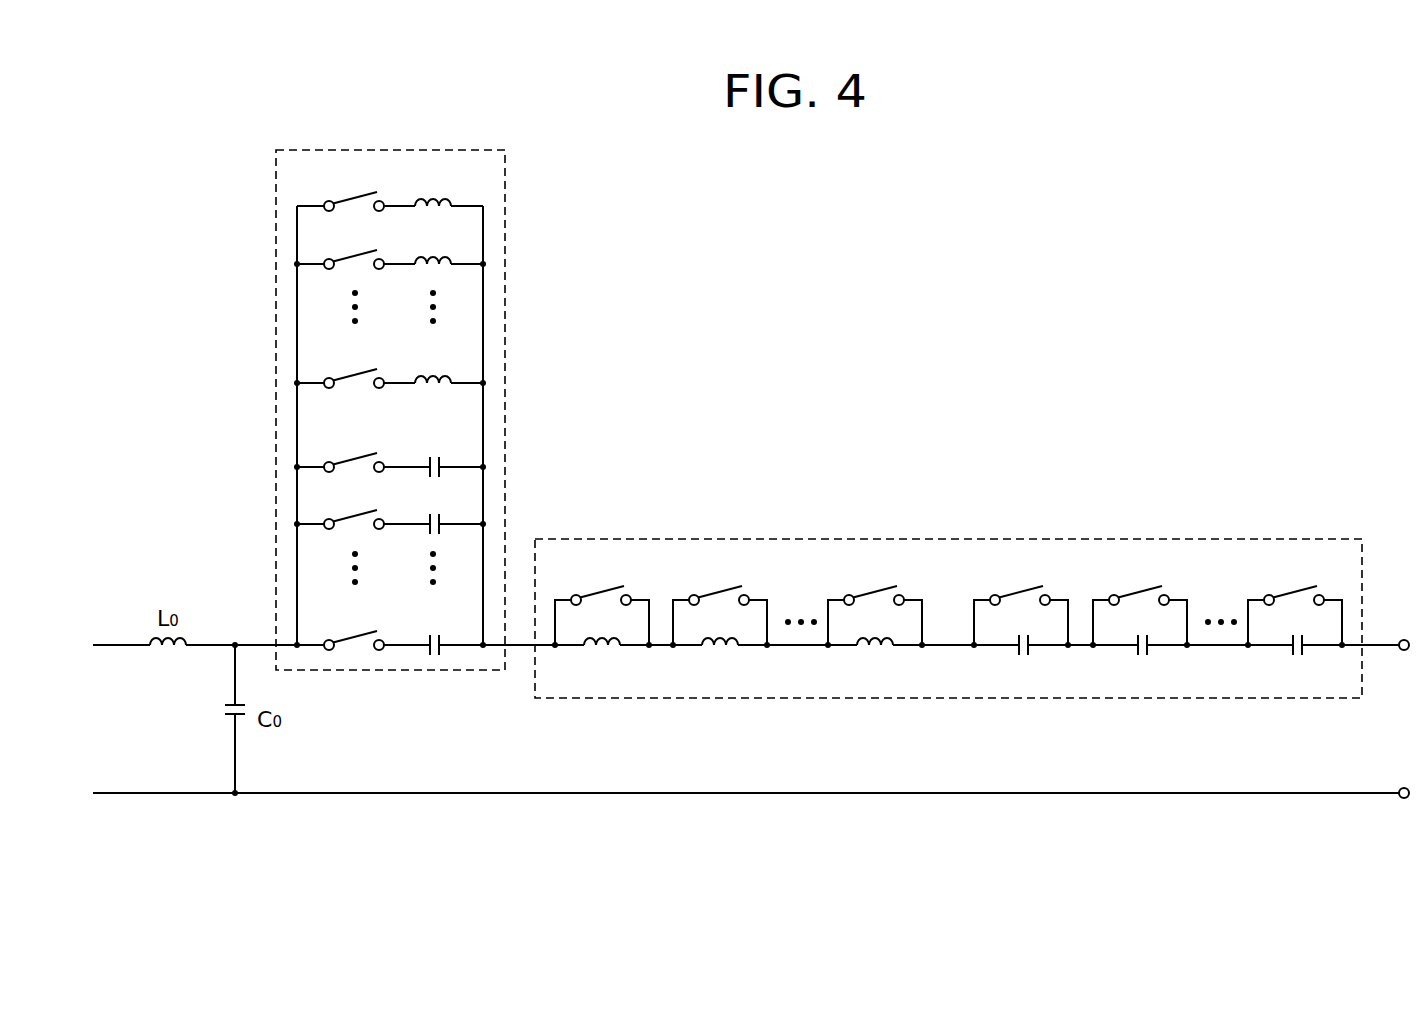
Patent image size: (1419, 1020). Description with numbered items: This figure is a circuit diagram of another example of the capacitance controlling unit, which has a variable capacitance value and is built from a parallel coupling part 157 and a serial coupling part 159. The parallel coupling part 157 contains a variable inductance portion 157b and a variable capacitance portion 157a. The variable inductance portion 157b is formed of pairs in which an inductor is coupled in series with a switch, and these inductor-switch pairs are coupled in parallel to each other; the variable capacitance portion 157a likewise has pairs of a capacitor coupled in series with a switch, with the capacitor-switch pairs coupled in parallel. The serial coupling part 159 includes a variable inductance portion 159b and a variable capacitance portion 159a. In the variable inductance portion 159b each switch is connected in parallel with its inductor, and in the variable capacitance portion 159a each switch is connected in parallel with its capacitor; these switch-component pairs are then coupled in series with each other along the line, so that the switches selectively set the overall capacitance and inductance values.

The parallel coupling part 157 is at (505, 368).
The variable capacitance portion 157a is at (265, 463).
The variable inductance portion 157b is at (265, 203).
The serial coupling part 159 is at (951, 538).
The variable capacitance portion 159a is at (1343, 708).
The variable inductance portion 159b is at (923, 708).